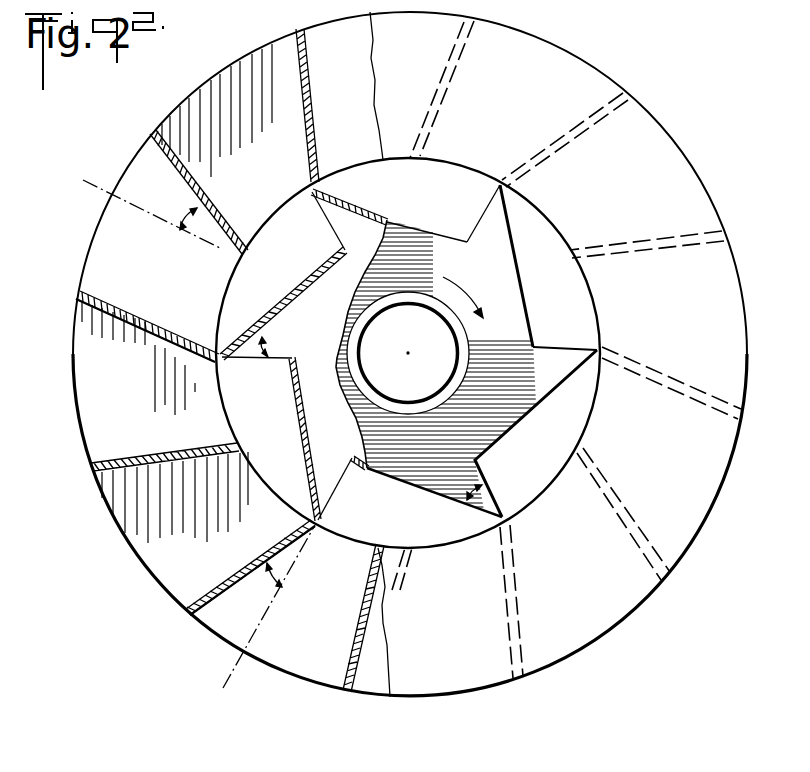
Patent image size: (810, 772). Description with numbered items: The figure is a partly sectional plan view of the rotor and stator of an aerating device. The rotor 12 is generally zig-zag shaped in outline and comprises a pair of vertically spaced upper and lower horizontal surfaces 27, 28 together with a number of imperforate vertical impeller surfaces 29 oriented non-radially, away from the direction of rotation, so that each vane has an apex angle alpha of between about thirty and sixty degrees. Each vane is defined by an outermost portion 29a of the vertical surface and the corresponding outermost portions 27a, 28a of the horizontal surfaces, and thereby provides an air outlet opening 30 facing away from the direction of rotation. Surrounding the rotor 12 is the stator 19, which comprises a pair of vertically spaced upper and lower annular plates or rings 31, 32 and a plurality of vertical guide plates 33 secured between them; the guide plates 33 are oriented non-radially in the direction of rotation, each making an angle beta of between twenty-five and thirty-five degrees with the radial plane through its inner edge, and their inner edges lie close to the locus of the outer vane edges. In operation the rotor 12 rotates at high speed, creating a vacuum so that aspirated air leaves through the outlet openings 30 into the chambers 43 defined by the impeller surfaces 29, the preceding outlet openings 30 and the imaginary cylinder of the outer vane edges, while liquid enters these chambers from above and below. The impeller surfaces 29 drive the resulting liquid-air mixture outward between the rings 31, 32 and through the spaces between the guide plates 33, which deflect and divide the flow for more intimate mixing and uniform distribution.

The rotor 12 is at (507, 327).
The stator 19 is at (712, 514).
The upper horizontal surface 27 is at (377, 437).
The outermost portion of upper horizontal surface 27a is at (497, 218).
The lower horizontal surface 28 is at (327, 326).
The outermost portion of lower horizontal surface 28a is at (343, 225).
The vertical impeller surface 29 is at (307, 282).
The outermost portion of vertical impeller surface 29a is at (340, 197).
The air outlet opening 30 is at (251, 362).
The upper annular plate 31 is at (688, 185).
The lower annular plate 32 is at (112, 248).
The vertical guide plate 33 is at (157, 328).
The chamber 43 is at (497, 471).